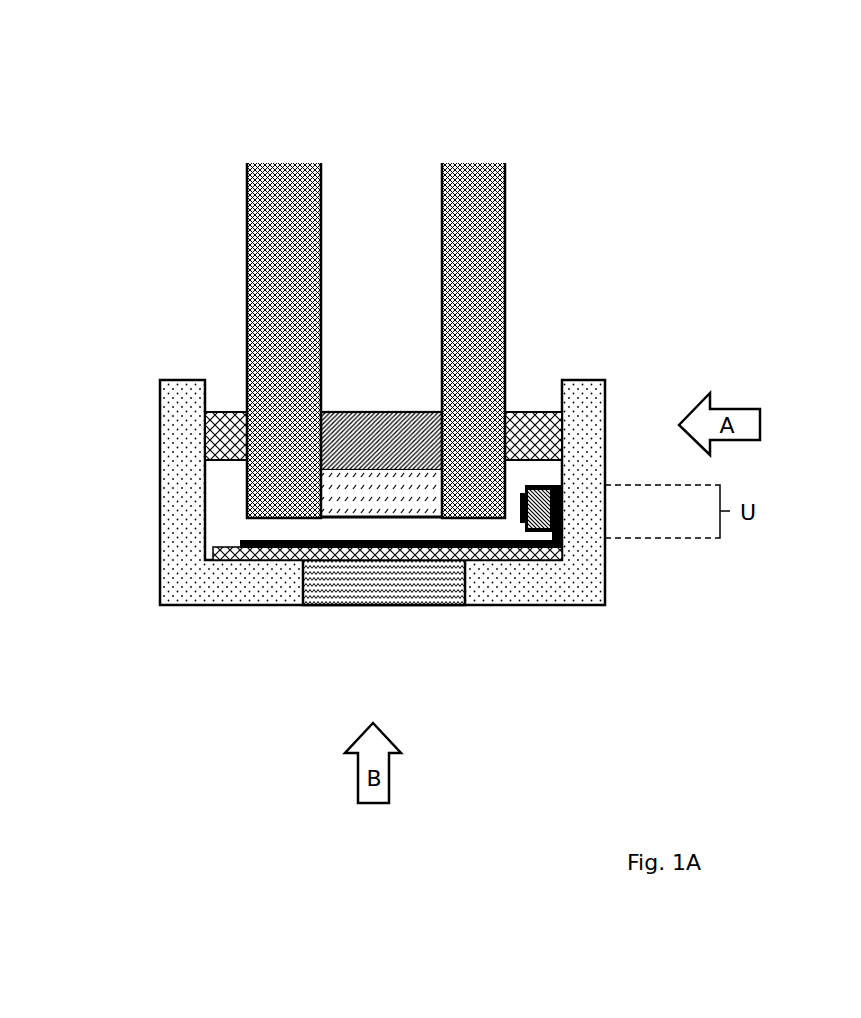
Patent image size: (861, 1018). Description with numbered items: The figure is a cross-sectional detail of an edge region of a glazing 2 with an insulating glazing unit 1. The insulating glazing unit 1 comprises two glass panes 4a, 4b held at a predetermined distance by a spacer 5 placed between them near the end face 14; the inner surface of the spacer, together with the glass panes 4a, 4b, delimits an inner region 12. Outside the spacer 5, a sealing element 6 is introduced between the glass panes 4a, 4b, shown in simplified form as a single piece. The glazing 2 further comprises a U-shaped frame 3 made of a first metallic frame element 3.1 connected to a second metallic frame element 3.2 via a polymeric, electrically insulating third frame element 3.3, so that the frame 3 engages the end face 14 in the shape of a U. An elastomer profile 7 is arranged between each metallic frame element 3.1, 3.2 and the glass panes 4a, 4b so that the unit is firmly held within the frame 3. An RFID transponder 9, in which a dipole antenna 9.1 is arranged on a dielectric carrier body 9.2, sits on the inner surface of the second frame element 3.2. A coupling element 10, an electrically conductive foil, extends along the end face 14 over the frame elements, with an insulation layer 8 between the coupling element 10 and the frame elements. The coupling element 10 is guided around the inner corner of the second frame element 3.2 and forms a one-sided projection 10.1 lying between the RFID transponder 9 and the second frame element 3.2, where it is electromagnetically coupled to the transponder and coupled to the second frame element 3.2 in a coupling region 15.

The insulating glazing unit 1 is at (519, 197).
The glazing 2 is at (136, 121).
The frame 3 is at (158, 427).
The first metallic frame element 3.1 is at (190, 535).
The second metallic frame element 3.2 is at (531, 486).
The third frame element 3.3 is at (408, 582).
The glass pane 4a is at (283, 180).
The glass pane 4b is at (473, 175).
The spacer 5 is at (388, 437).
The sealing element 6 is at (338, 482).
The elastomer profile 7 is at (222, 432).
The insulation layer 8 is at (253, 555).
The RFID transponder 9 is at (562, 527).
The dipole antenna 9.1 is at (557, 508).
The dielectric carrier body 9.2 is at (541, 485).
The coupling element 10 is at (428, 546).
The one-sided projection 10.1 is at (563, 541).
The inner region 12 is at (382, 215).
The end face 14 is at (320, 706).
The coupling region 15 is at (566, 486).